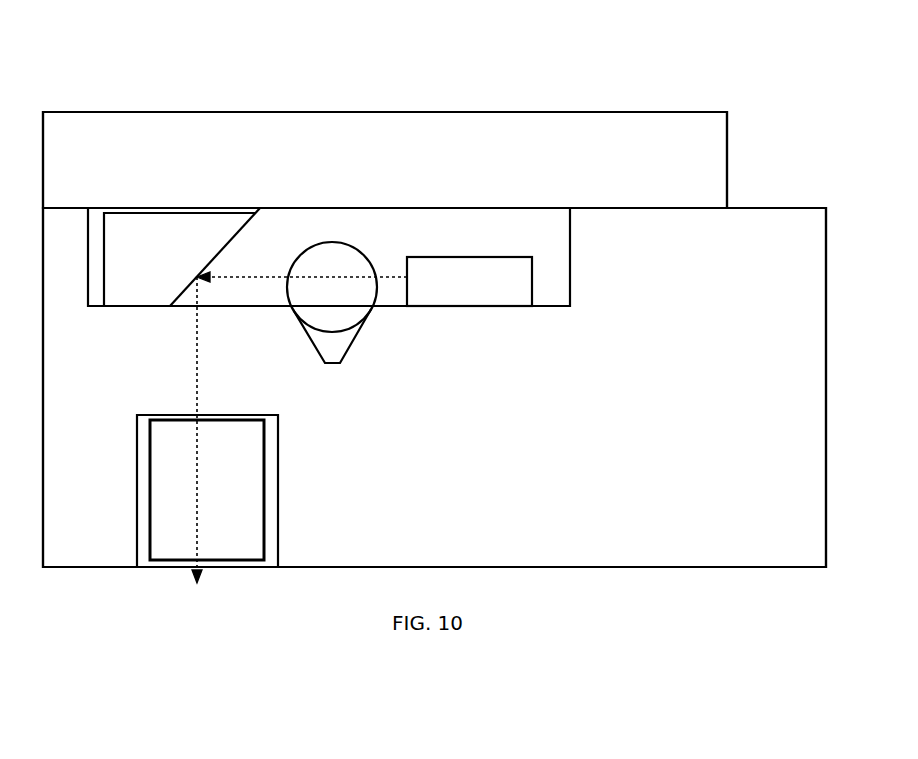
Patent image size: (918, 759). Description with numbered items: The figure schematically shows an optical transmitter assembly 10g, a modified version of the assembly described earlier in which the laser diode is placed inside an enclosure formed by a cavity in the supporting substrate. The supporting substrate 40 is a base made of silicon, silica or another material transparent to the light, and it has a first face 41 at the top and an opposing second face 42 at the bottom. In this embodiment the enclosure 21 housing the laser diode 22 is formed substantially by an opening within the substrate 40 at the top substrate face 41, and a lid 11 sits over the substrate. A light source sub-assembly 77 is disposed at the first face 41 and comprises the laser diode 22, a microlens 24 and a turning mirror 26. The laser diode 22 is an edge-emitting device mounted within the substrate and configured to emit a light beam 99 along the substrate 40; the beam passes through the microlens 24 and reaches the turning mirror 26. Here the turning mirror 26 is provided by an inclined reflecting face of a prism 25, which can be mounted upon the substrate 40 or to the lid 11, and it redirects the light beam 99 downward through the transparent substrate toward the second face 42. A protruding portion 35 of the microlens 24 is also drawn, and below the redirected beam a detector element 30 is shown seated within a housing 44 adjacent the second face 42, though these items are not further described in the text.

The optical transmitter assembly 10g is at (270, 80).
The lid 11 is at (140, 156).
The enclosure 21 is at (462, 208).
The laser diode 22 is at (475, 293).
The microlens 24 is at (333, 242).
The prism 25 is at (185, 248).
The turning mirror 26 is at (240, 228).
The detector 30 is at (150, 456).
The lens protrusion 35 is at (353, 338).
The supporting substrate 40 is at (705, 326).
The first face 41 is at (630, 208).
The second face 42 is at (653, 567).
The detector housing 44 is at (278, 493).
The light source sub-assembly 77 is at (330, 220).
The light beam 99 is at (385, 277).